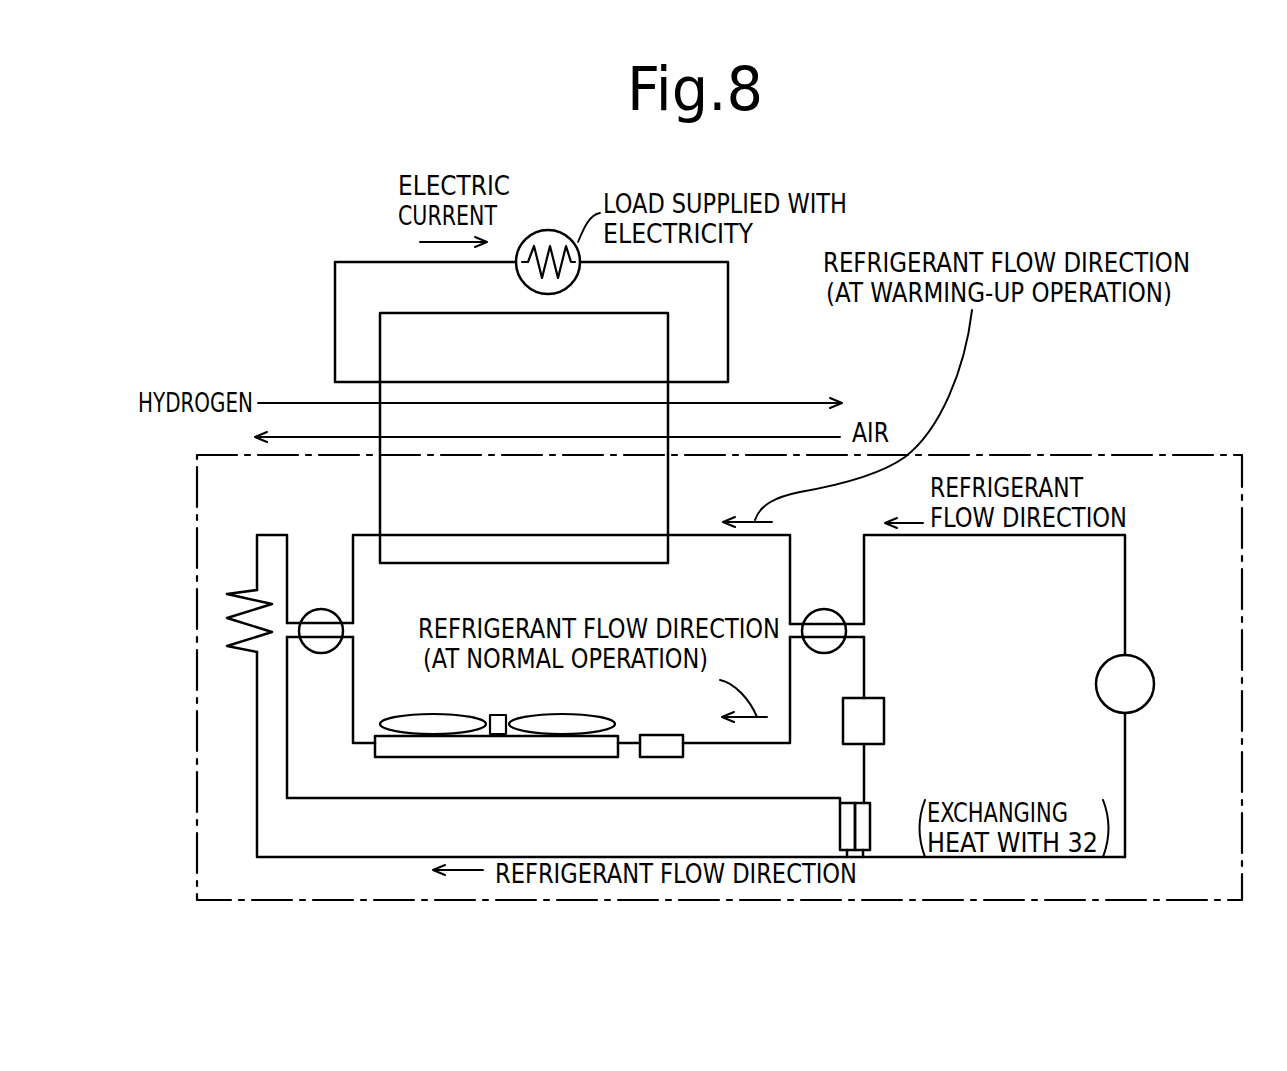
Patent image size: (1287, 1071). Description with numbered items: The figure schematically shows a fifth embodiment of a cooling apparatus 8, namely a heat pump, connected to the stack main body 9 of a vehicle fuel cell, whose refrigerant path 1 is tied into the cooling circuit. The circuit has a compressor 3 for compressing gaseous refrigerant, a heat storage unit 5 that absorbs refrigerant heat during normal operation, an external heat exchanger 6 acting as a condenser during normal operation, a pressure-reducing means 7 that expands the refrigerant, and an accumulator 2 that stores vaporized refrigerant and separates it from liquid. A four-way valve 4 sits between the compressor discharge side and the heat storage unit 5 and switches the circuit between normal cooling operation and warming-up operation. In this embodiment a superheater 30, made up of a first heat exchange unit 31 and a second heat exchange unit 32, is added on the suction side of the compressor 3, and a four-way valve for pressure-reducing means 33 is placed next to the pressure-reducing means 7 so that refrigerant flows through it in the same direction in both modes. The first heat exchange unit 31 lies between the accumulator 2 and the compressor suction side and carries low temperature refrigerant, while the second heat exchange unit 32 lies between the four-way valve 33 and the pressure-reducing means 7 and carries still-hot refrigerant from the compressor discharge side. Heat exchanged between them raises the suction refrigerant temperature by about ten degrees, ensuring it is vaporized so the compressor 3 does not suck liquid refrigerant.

The refrigerant path 1 is at (518, 533).
The accumulator 2 is at (886, 717).
The compressor 3 is at (1145, 662).
The four-way valve 4 is at (828, 609).
The heat storage unit 5 is at (680, 758).
The external heat exchanger 6 is at (480, 760).
The pressure-reducing means 7 is at (238, 590).
The cooling apparatus 8 is at (1040, 430).
The stack main body 9 is at (630, 325).
The superheater 30 is at (849, 788).
The first heat exchange unit 31 is at (858, 803).
The second heat exchange unit 32 is at (840, 825).
The four-way valve for pressure-reducing means 33 is at (326, 609).